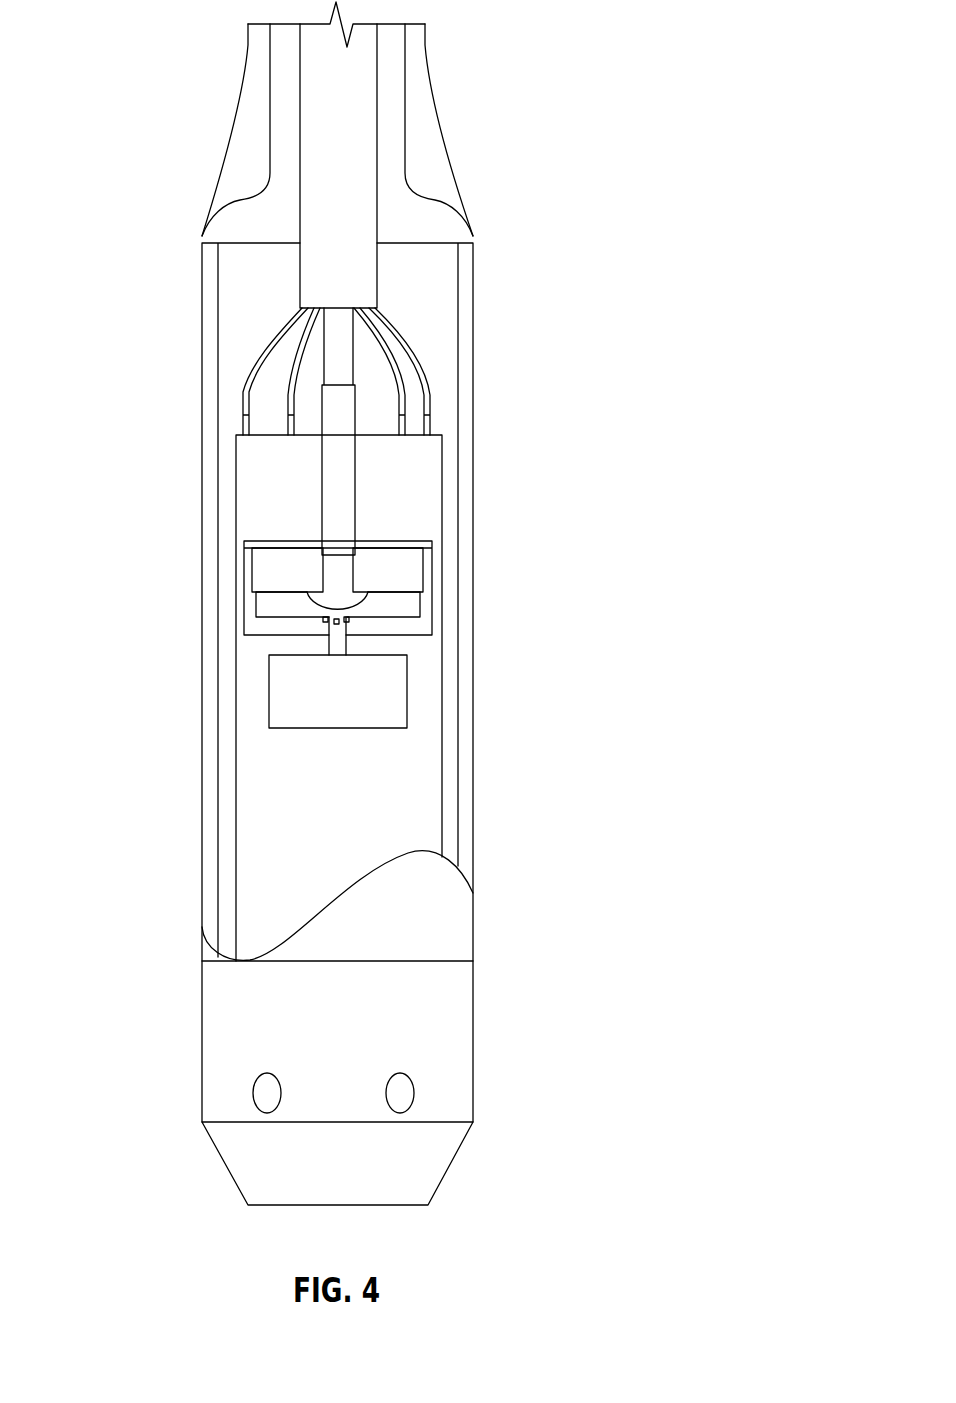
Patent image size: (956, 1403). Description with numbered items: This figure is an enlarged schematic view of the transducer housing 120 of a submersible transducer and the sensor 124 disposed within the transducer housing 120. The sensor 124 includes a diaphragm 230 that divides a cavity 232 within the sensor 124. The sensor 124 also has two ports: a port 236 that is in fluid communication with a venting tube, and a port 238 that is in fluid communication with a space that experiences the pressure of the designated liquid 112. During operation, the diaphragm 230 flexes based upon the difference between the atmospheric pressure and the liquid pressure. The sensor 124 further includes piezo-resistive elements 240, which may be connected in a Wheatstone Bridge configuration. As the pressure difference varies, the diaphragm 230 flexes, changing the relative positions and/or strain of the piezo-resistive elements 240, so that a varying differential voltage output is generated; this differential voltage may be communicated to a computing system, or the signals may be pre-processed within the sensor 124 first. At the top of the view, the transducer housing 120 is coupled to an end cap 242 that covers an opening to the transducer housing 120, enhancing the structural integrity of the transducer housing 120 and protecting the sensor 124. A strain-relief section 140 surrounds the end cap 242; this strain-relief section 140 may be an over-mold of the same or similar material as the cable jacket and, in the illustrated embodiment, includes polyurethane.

The designated liquid 112 is at (575, 860).
The transducer housing 120 is at (473, 297).
The sensor 124 is at (442, 435).
The strain-relief section 140 is at (462, 117).
The diaphragm 230 is at (338, 612).
The cavity 232 is at (244, 635).
The port 236 is at (325, 598).
The port 238 is at (335, 654).
The piezo-resistive elements 240 is at (338, 622).
The end cap 242 is at (223, 168).